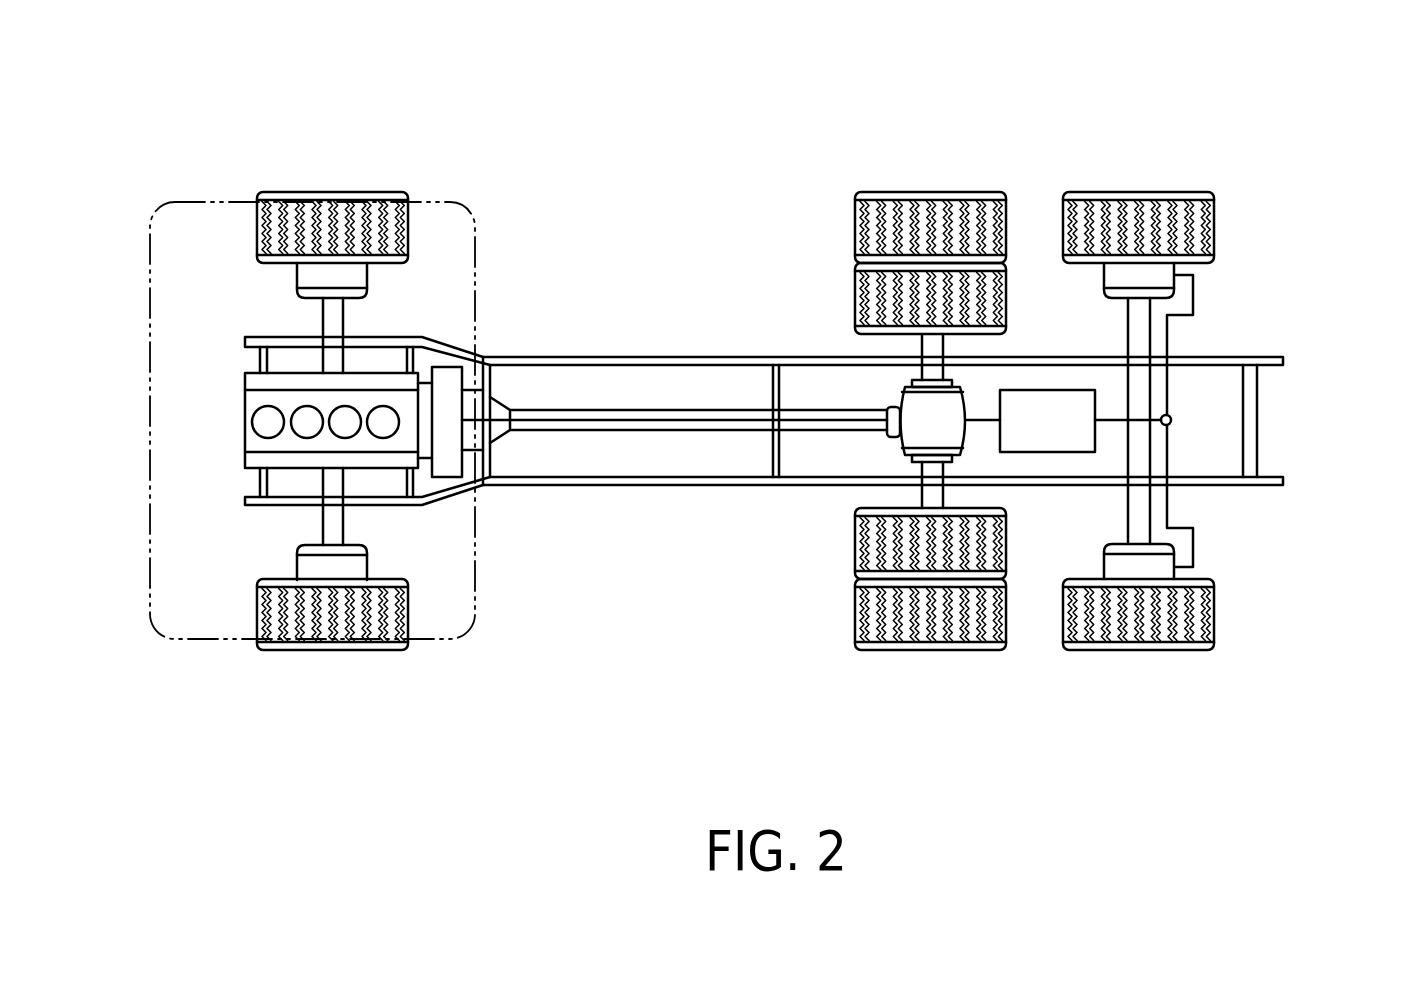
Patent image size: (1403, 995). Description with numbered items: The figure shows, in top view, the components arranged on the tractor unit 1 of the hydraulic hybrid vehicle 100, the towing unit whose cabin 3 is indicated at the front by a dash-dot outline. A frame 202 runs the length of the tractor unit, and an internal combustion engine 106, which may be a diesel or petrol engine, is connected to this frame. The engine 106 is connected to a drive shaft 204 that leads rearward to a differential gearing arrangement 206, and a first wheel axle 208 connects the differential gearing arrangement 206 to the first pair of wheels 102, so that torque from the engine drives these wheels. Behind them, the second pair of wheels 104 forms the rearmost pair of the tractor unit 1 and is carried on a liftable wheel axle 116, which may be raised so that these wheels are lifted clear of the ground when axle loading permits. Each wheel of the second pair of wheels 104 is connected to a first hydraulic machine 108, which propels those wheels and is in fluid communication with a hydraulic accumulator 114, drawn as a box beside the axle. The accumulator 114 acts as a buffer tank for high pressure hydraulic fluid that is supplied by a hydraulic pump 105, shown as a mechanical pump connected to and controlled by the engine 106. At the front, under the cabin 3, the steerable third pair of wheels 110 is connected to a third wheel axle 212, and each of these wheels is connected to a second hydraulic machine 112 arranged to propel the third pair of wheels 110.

The hydraulic hybrid vehicle 100 is at (530, 92).
The tractor unit 1 is at (545, 252).
The cabin 3 is at (157, 219).
The first pair of wheels 102 is at (932, 212).
The second pair of wheels 104 is at (1125, 213).
The hydraulic pump 105 is at (448, 462).
The internal combustion engine 106 is at (245, 423).
The first hydraulic machine 108 is at (1115, 278).
The third pair of wheels 110 is at (320, 212).
The second hydraulic machine 112 is at (308, 278).
The hydraulic accumulator 114 is at (1053, 420).
The liftable wheel axle 116 is at (1150, 338).
The frame 202 is at (643, 357).
The drive shaft 204 is at (738, 410).
The differential gearing arrangement 206 is at (937, 405).
The first wheel axle 208 is at (933, 494).
The third wheel axle 212 is at (330, 522).